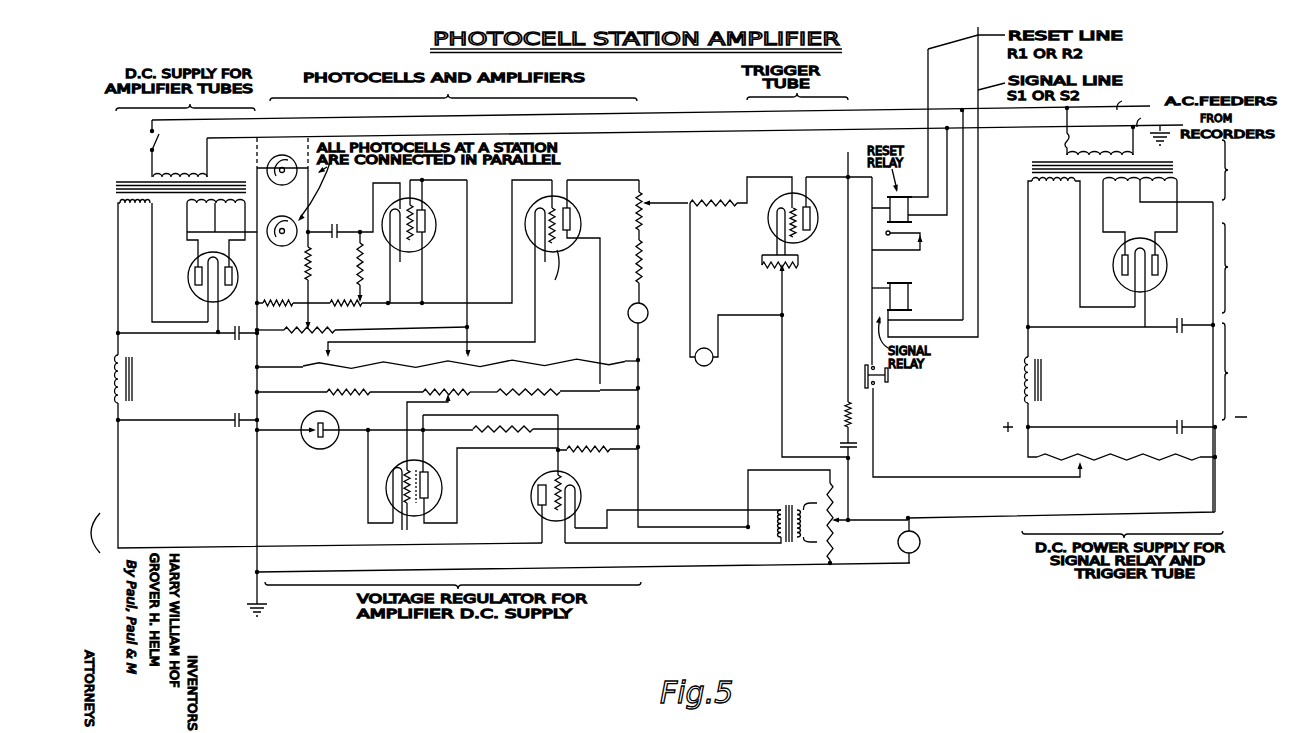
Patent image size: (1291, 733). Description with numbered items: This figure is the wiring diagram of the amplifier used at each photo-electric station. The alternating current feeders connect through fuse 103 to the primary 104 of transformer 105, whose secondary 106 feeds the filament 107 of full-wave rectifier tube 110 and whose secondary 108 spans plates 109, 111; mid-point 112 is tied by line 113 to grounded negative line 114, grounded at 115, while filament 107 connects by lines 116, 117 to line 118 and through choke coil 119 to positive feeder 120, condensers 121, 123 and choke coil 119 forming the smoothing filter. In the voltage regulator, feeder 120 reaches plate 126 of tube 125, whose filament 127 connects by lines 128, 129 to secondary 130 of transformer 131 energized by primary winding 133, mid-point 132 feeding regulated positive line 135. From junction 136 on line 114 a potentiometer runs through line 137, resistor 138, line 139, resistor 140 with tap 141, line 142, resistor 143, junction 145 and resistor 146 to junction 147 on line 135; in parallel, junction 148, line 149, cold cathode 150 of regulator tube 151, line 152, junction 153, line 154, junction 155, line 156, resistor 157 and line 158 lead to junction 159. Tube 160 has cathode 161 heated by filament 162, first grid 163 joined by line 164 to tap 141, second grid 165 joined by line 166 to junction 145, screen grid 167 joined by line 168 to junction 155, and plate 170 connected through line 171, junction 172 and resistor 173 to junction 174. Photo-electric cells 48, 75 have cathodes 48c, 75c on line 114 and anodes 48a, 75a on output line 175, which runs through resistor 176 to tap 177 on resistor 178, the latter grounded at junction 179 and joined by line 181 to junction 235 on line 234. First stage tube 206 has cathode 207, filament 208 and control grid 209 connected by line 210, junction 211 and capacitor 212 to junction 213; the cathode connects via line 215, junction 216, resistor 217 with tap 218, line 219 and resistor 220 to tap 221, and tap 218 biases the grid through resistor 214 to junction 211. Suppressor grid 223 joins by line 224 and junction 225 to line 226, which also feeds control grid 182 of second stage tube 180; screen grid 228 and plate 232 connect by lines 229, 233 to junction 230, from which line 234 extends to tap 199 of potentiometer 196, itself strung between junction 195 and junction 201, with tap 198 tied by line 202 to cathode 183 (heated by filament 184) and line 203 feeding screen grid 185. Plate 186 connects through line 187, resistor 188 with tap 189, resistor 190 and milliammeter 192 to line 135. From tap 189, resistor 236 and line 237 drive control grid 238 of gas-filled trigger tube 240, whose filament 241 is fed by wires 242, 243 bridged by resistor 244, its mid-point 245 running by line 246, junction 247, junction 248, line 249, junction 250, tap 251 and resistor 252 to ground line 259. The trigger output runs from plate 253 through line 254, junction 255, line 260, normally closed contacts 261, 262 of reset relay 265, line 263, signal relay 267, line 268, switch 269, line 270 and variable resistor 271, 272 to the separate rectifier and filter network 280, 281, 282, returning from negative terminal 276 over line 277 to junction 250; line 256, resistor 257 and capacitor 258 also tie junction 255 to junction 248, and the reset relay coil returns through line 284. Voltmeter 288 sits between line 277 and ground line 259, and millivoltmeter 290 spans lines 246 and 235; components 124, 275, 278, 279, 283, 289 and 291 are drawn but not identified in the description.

The photo-electric cell 48 is at (286, 220).
The anode 48a is at (293, 246).
The cathode 48c is at (278, 243).
The photo-electric cell 75 is at (284, 186).
The anode 75a is at (286, 167).
The cathode 75c is at (278, 160).
The fuse 103 is at (156, 135).
The primary 104 is at (186, 174).
The transformer 105 is at (119, 179).
The secondary 106 is at (134, 267).
The filament 107 is at (205, 292).
The secondary 108 is at (216, 234).
The plate 109 is at (195, 278).
The full-wave rectifier tube 110 is at (188, 268).
The plate 111 is at (233, 266).
The mid-point 112 is at (217, 209).
The line 113 is at (216, 231).
The grounded negative line 114 is at (258, 210).
The ground 115 is at (254, 601).
The line 116 is at (152, 303).
The line 117 is at (219, 310).
The line 118 is at (117, 337).
The choke coil 119 is at (134, 372).
The feeder 120 is at (118, 472).
The condenser 121 is at (233, 340).
The condenser 123 is at (233, 428).
The grid 124 is at (561, 477).
The thermionic tube 125 is at (533, 479).
The plate 126 is at (538, 495).
The filament 127 is at (577, 496).
The line 128 is at (668, 509).
The line 129 is at (663, 544).
The secondary 130 is at (776, 510).
The transformer 131 is at (789, 547).
The mid-point 132 is at (775, 530).
The primary winding 133 is at (803, 502).
The regulated positive voltage feeder 135 is at (640, 475).
The junction 136 is at (262, 392).
The line 137 is at (298, 392).
The resistor 138 is at (345, 391).
The line 139 is at (389, 391).
The resistor 140 is at (441, 391).
The adjustable tap 141 is at (452, 398).
The line 142 is at (486, 391).
The resistor 143 is at (520, 390).
The junction 145 is at (566, 399).
The resistor 146 is at (603, 388).
The junction 147 is at (640, 388).
The junction 148 is at (259, 432).
The line 149 is at (272, 429).
The cold cathode 150 is at (311, 436).
The gas-filled regulator tube 151 is at (327, 450).
The line 152 is at (350, 427).
The junction 153 is at (367, 432).
The line 154 is at (377, 429).
The junction 155 is at (425, 433).
The line 156 is at (467, 433).
The resistor 157 is at (507, 432).
The line 158 is at (577, 427).
The junction 159 is at (640, 426).
The thermionic tube 160 is at (383, 492).
The cathode emitter 161 is at (392, 470).
The filament 162 is at (400, 531).
The first grid 163 is at (406, 462).
The line 164 is at (407, 403).
The second grid 165 is at (408, 523).
The line 166 is at (419, 446).
The screen grid 167 is at (427, 470).
The line 168 is at (420, 454).
The plate 170 is at (429, 481).
The line 171 is at (458, 517).
The junction 172 is at (556, 452).
The resistor 173 is at (587, 447).
The junction 174 is at (643, 447).
The photo-electric cell output line 175 is at (311, 228).
The resistor 176 is at (310, 255).
The variable tap 177 is at (313, 327).
The resistor 178 is at (326, 332).
The junction 179 is at (259, 331).
The thermionic tube 180 is at (574, 251).
The line 181 is at (418, 329).
The control grid 182 is at (559, 271).
The cathode emitter 183 is at (538, 209).
The filament 184 is at (545, 263).
The screen grid 185 is at (572, 236).
The plate 186 is at (571, 214).
The line 187 is at (593, 180).
The resistor 188 is at (644, 186).
The variable tap 189 is at (648, 206).
The resistor 190 is at (642, 252).
The milliammeter 192 is at (645, 305).
The junction 195 is at (256, 367).
The potentiometer resistor 196 is at (404, 363).
The variable tap 198 is at (385, 350).
The variable tap 199 is at (470, 353).
The junction 201 is at (640, 360).
The line 202 is at (536, 325).
The line 203 is at (599, 293).
The first stage amplifier tube 206 is at (433, 249).
The cathode emitter 207 is at (390, 245).
The filament 208 is at (400, 263).
The control grid 209 is at (400, 205).
The line 210 is at (372, 184).
The junction 211 is at (360, 230).
The capacitor 212 is at (338, 224).
The junction 213 is at (309, 230).
The resistor 214 is at (358, 268).
The line 215 is at (362, 268).
The junction 216 is at (389, 306).
The resistor 217 is at (365, 306).
The variable tap 218 is at (361, 299).
The line 219 is at (316, 302).
The resistor 220 is at (292, 297).
The tap 221 is at (260, 302).
The suppresser grid 223 is at (427, 220).
The line 224 is at (423, 274).
The junction 225 is at (423, 301).
The line 226 is at (483, 302).
The screen grid 228 is at (426, 231).
The line 229 is at (415, 183).
The junction 230 is at (424, 180).
The plate 232 is at (426, 210).
The line 233 is at (424, 190).
The line 234 is at (468, 190).
The junction 235 is at (469, 327).
The resistor 236 is at (711, 209).
The line 237 is at (770, 176).
The control grid 238 is at (797, 238).
The gas-filled trigger tube 240 is at (766, 231).
The filament 241 is at (777, 208).
The filament feed wire 242 is at (761, 266).
The filament feed wire 243 is at (799, 266).
The resistor 244 is at (790, 272).
The mid-point 245 is at (779, 268).
The line 246 is at (784, 352).
The junction 247 is at (784, 315).
The junction 248 is at (850, 460).
The line 249 is at (850, 492).
The junction 250 is at (850, 521).
The variable tap 251 is at (838, 524).
The resistor 252 is at (833, 551).
The plate 253 is at (810, 215).
The line 254 is at (827, 176).
The junction 255 is at (847, 157).
The line 256 is at (877, 244).
The resistor 257 is at (845, 415).
The capacitor 258 is at (843, 443).
The ground line 259 is at (737, 567).
The line 260 is at (258, 571).
The contact 261 is at (923, 234).
The contact 262 is at (923, 244).
The line 263 is at (873, 267).
The reset relay 265 is at (909, 209).
The signal relay 267 is at (912, 290).
The line 268 is at (871, 327).
The manually operated switch 269 is at (889, 378).
The line 270 is at (875, 429).
The variable resistor 271 is at (1085, 466).
The variable resistor 272 is at (1065, 454).
The filter choke 275 is at (1031, 423).
The negative output terminal 276 is at (1218, 428).
The line 277 is at (998, 516).
The junction 278 is at (909, 517).
The lead 279 is at (762, 469).
The rectifier and filter network 280 is at (722, 519).
The rectifier and filter network 281 is at (923, 318).
The rectifier and filter network 282 is at (1141, 357).
The filament secondary 283 is at (979, 187).
The line 284 is at (947, 162).
The voltmeter 288 is at (921, 543).
The lead 289 is at (736, 318).
The millivoltmeter 290 is at (708, 367).
The lead 291 is at (691, 270).